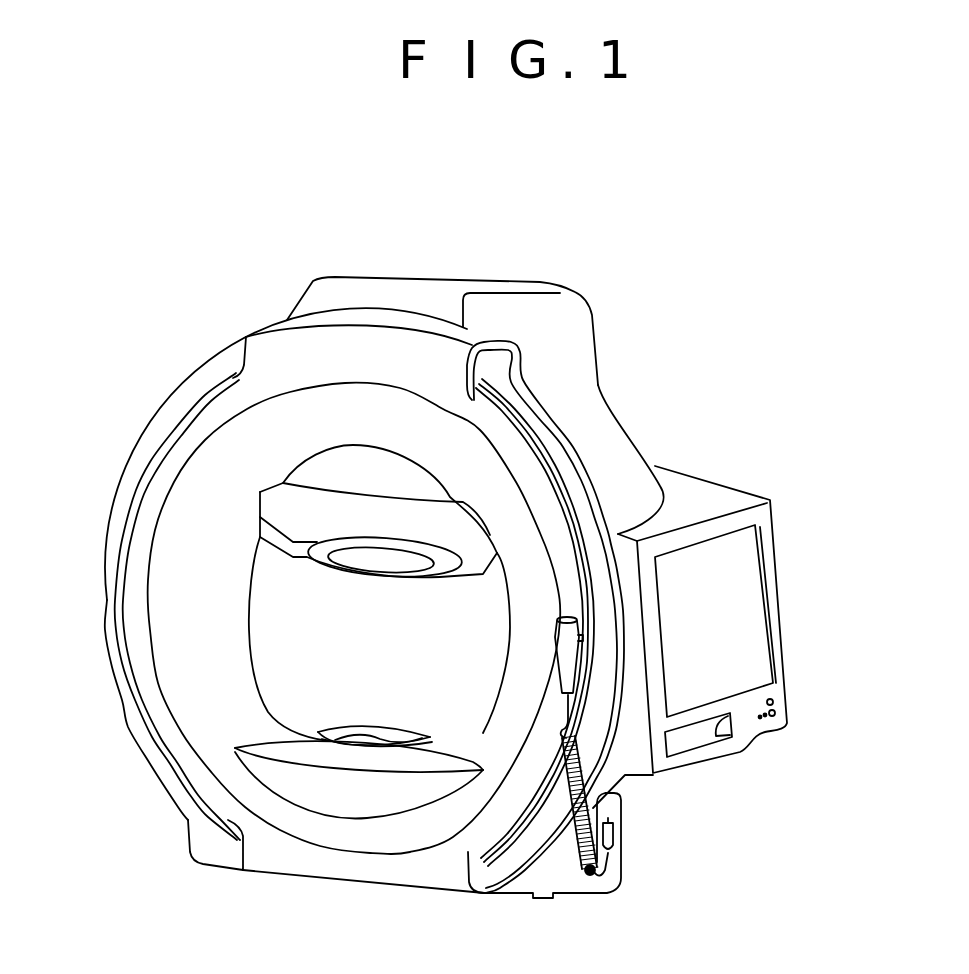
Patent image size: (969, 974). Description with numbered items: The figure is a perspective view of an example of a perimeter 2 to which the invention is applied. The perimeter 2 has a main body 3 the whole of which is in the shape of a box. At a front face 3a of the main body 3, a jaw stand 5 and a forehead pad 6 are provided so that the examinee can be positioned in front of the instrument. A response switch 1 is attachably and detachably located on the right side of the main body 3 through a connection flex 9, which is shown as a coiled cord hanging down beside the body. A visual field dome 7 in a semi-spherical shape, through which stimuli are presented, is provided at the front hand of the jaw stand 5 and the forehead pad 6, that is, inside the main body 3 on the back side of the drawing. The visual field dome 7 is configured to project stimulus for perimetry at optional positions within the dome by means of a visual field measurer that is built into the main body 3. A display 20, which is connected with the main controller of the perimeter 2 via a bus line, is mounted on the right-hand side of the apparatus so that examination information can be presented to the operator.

The response switch 1 is at (565, 642).
The perimeter 2 is at (643, 330).
The main body 3 is at (618, 440).
The front face 3a is at (177, 617).
The jaw stand 5 is at (355, 728).
The forehead pad 6 is at (366, 567).
The visual field dome 7 is at (474, 673).
The connection flex 9 is at (577, 870).
The display 20 is at (755, 643).